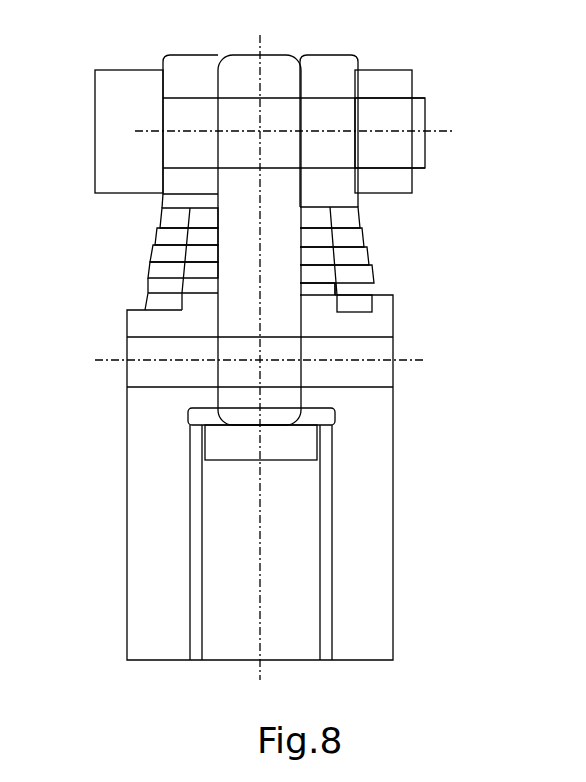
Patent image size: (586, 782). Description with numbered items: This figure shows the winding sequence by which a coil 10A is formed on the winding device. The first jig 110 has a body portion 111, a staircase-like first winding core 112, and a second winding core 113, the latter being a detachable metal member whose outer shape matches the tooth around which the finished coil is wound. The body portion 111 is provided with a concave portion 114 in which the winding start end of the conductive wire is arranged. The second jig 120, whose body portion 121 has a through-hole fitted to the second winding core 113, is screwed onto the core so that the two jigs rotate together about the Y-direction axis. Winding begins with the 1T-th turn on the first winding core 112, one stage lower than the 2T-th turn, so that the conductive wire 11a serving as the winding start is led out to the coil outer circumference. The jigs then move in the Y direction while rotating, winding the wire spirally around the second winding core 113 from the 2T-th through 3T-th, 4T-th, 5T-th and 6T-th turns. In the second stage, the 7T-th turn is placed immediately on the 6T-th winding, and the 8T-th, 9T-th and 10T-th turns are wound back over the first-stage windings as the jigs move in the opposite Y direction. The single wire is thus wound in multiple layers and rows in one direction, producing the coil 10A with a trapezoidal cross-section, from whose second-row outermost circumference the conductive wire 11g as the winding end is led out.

The second jig 120 is at (465, 96).
The body portion 121 is at (338, 55).
The first jig 110 is at (458, 385).
The body portion 111 is at (127, 433).
The first winding core 112 is at (177, 303).
The second winding core 113 is at (180, 238).
The concave portion 114 is at (408, 302).
The conductive wire as winding end 11g is at (150, 275).
The conductive wire as winding start 11a is at (365, 290).
The coil 10A is at (394, 248).
The 1T-th turn 1T is at (355, 305).
The 2T-th turn 2T is at (317, 290).
The 3T-th turn 3T is at (317, 274).
The 4T-th turn 4T is at (316, 256).
The 5T-th turn 5T is at (315, 238).
The 6T-th turn 6T is at (314, 219).
The 7T-th turn 7T is at (344, 219).
The 8T-th turn 8T is at (347, 238).
The 9T-th turn 9T is at (350, 256).
The 10T-th turn 10T is at (351, 274).